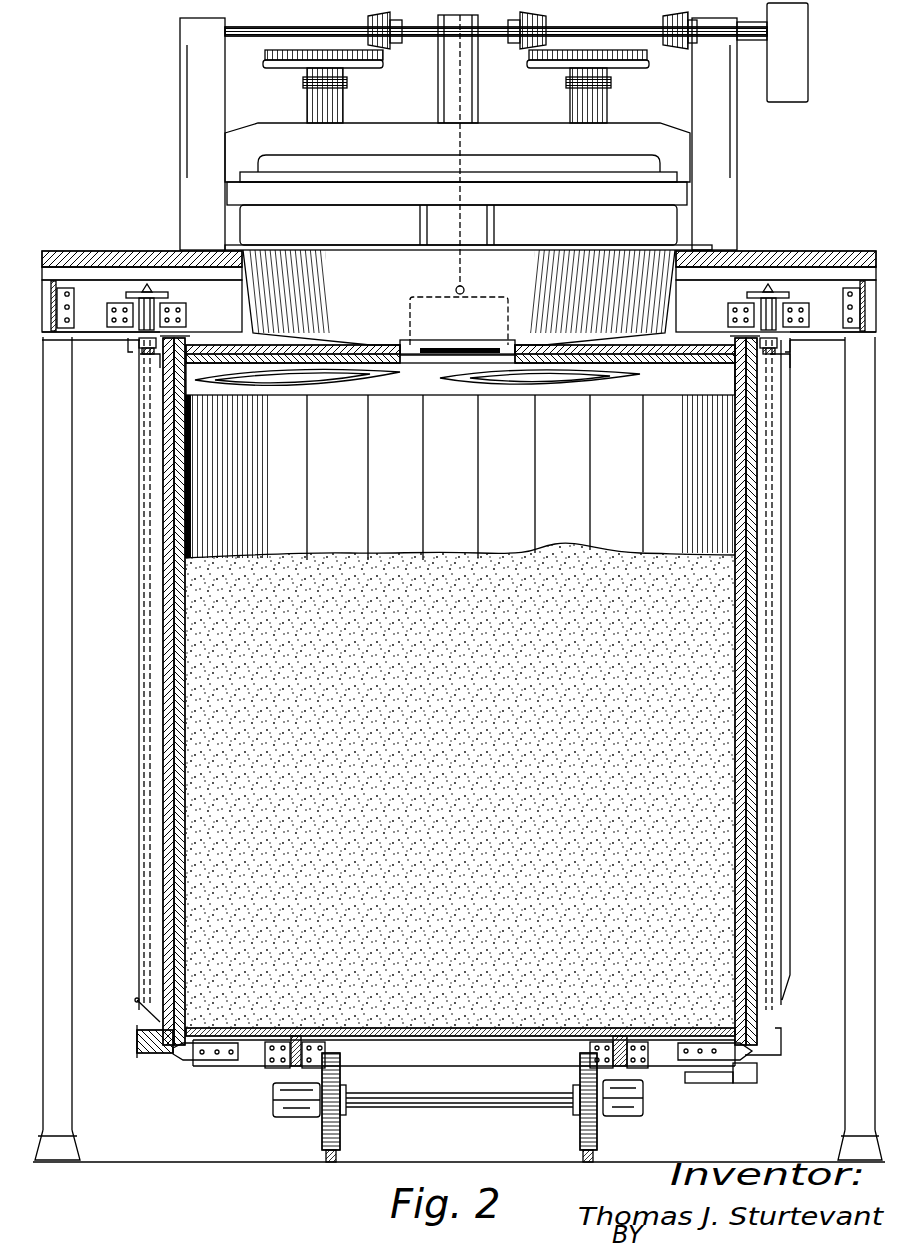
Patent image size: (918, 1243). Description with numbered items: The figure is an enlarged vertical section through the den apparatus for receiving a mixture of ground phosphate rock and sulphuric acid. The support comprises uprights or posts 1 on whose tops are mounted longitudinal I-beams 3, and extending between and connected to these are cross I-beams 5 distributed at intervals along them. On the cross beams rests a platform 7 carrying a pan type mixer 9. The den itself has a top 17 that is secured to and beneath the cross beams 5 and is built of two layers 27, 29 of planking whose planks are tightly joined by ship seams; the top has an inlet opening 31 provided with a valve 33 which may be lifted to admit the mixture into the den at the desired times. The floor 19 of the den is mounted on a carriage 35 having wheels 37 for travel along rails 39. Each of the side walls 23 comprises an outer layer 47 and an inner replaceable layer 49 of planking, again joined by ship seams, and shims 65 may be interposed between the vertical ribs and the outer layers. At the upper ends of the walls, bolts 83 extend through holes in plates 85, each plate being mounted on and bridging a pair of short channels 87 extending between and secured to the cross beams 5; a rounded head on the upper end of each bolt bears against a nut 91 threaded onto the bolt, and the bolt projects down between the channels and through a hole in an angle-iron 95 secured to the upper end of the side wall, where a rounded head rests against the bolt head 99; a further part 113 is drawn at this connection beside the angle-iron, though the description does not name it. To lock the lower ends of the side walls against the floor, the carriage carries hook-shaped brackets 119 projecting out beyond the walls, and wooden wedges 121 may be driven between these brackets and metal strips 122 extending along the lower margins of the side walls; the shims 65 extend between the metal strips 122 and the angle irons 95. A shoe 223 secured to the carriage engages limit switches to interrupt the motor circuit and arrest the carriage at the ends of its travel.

The uprights or posts 1 is at (72, 755).
The longitudinal I-beams 3 is at (62, 308).
The cross I-beams 5 is at (205, 288).
The platform 7 is at (108, 250).
The pan type mixer 9 is at (180, 170).
The top 17 is at (586, 358).
The floor 19 is at (470, 1036).
The side walls 23 is at (137, 590).
The layer of planking 27 is at (333, 364).
The layer of planking 29 is at (268, 364).
The inlet opening 31 is at (456, 360).
The valve 33 is at (410, 310).
The carriage 35 is at (267, 1076).
The wheels 37 is at (324, 1126).
The rails 39 is at (337, 1159).
The outer layer 47 is at (165, 484).
The inner replaceable layer 49 is at (176, 506).
The shims 65 is at (163, 889).
The bolts 83 is at (175, 318).
The plates 85 is at (170, 296).
The short channels 87 is at (130, 313).
The nut 91 is at (146, 288).
The angle-iron 95 is at (160, 370).
The bolt head 99 is at (150, 357).
The nut 113 is at (130, 349).
The hook-shaped brackets 119 is at (185, 1064).
The wooden wedges 121 is at (140, 1049).
The metal strips 122 is at (160, 1010).
The shoe 223 is at (757, 1081).